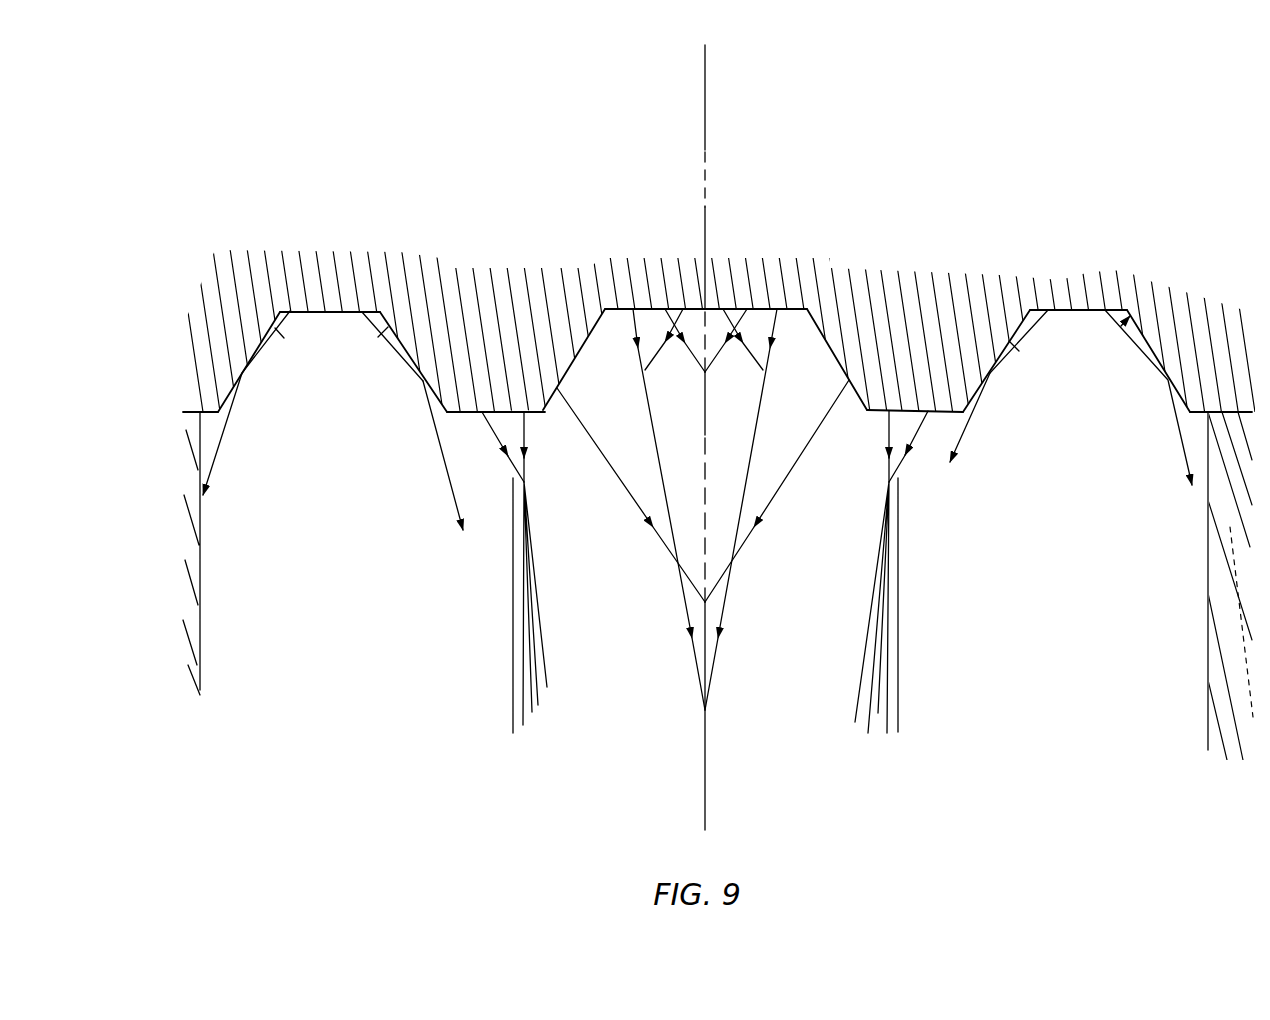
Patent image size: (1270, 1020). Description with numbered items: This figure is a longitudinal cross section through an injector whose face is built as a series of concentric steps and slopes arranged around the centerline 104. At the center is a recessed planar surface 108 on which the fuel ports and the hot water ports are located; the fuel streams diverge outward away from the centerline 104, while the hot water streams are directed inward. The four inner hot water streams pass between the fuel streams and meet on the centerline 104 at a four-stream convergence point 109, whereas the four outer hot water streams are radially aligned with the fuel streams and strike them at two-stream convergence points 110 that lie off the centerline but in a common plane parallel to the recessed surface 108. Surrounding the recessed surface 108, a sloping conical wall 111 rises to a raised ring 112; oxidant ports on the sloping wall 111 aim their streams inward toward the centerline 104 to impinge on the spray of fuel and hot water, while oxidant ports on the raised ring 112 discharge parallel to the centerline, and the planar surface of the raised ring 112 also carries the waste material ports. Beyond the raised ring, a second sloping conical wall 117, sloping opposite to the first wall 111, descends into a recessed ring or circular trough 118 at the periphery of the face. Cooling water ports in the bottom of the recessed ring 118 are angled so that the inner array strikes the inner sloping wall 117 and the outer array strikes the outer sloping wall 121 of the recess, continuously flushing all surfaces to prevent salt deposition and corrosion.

The centerline 104 is at (707, 222).
The recessed planar surface 108 is at (787, 316).
The four-stream convergence point 109 is at (697, 378).
The two-stream convergence points 110 is at (653, 375).
The sloping conical wall 111 is at (594, 334).
The raised ring 112 is at (467, 416).
The second sloping conical wall 117 is at (379, 341).
The recessed ring 118 is at (329, 314).
The outer sloping wall 121 is at (276, 331).